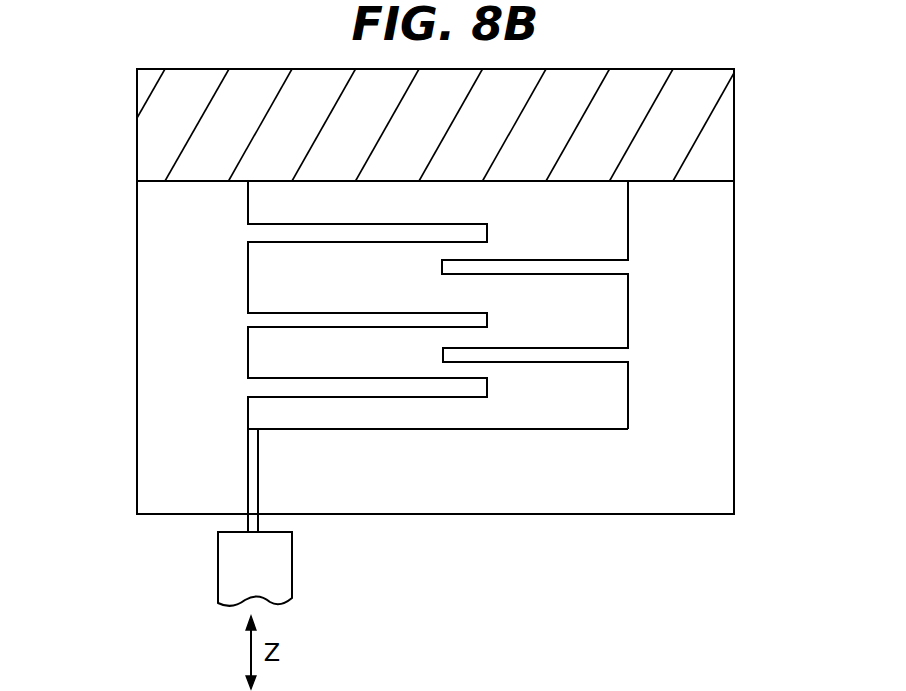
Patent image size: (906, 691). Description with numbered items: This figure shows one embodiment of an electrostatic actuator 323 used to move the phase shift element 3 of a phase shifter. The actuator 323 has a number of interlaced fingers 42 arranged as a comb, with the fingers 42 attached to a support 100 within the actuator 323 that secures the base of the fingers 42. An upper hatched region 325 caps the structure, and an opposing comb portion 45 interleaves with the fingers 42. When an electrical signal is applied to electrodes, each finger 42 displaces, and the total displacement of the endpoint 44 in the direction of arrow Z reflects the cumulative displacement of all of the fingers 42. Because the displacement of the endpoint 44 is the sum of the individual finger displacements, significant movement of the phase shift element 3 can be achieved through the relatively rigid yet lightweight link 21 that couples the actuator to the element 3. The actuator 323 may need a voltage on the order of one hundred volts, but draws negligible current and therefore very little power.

The support 100 is at (718, 148).
The upper layer (hatched) 325 is at (128, 155).
The electrostatic actuator 323 is at (128, 338).
The interlaced fingers 42 is at (248, 257).
The fixed comb electrode 45 is at (628, 315).
The endpoint 44 is at (248, 430).
The link 21 is at (260, 493).
The phase shift element 3 is at (292, 582).